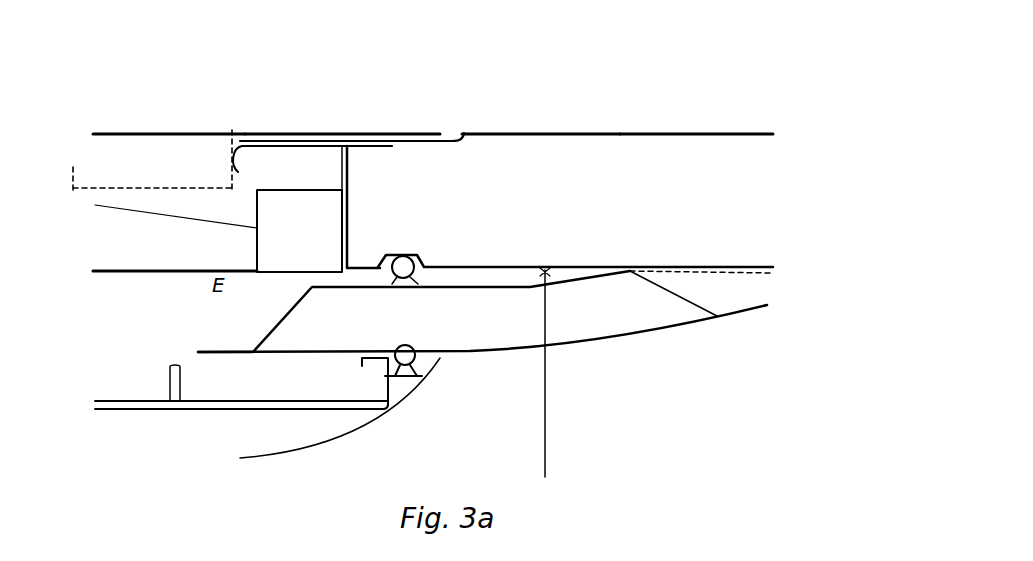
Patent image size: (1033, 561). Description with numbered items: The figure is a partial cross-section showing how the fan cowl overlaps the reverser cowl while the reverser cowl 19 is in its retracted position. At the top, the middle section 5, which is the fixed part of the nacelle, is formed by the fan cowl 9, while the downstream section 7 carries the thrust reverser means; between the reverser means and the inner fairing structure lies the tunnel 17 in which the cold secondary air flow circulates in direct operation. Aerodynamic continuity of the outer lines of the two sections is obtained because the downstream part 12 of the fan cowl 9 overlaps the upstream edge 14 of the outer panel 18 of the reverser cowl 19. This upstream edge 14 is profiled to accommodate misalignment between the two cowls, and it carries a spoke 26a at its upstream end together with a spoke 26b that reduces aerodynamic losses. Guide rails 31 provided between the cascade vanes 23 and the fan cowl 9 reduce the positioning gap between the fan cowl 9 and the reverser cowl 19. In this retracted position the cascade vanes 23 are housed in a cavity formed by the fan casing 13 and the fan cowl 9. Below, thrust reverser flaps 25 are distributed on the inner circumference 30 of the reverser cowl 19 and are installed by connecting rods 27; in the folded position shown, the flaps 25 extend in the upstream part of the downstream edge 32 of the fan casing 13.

The middle section 5 is at (215, 79).
The downstream section 7 is at (628, 76).
The fan cowl 9 is at (148, 123).
The upstream edge 14 is at (305, 133).
The downstream part 12 is at (396, 133).
The spoke 26a is at (232, 173).
The spoke 26b is at (464, 131).
The outer panel 18 is at (503, 132).
The reverser cowl 19 is at (696, 120).
The guide rails 31 is at (148, 195).
The cascade vanes 23 is at (150, 280).
The inner circumference 30 is at (473, 265).
The tunnel 17 is at (670, 397).
The thrust reverser flaps 25 is at (512, 360).
The connecting rods 27 is at (557, 442).
The downstream edge 32 is at (362, 376).
The fan casing 13 is at (146, 415).